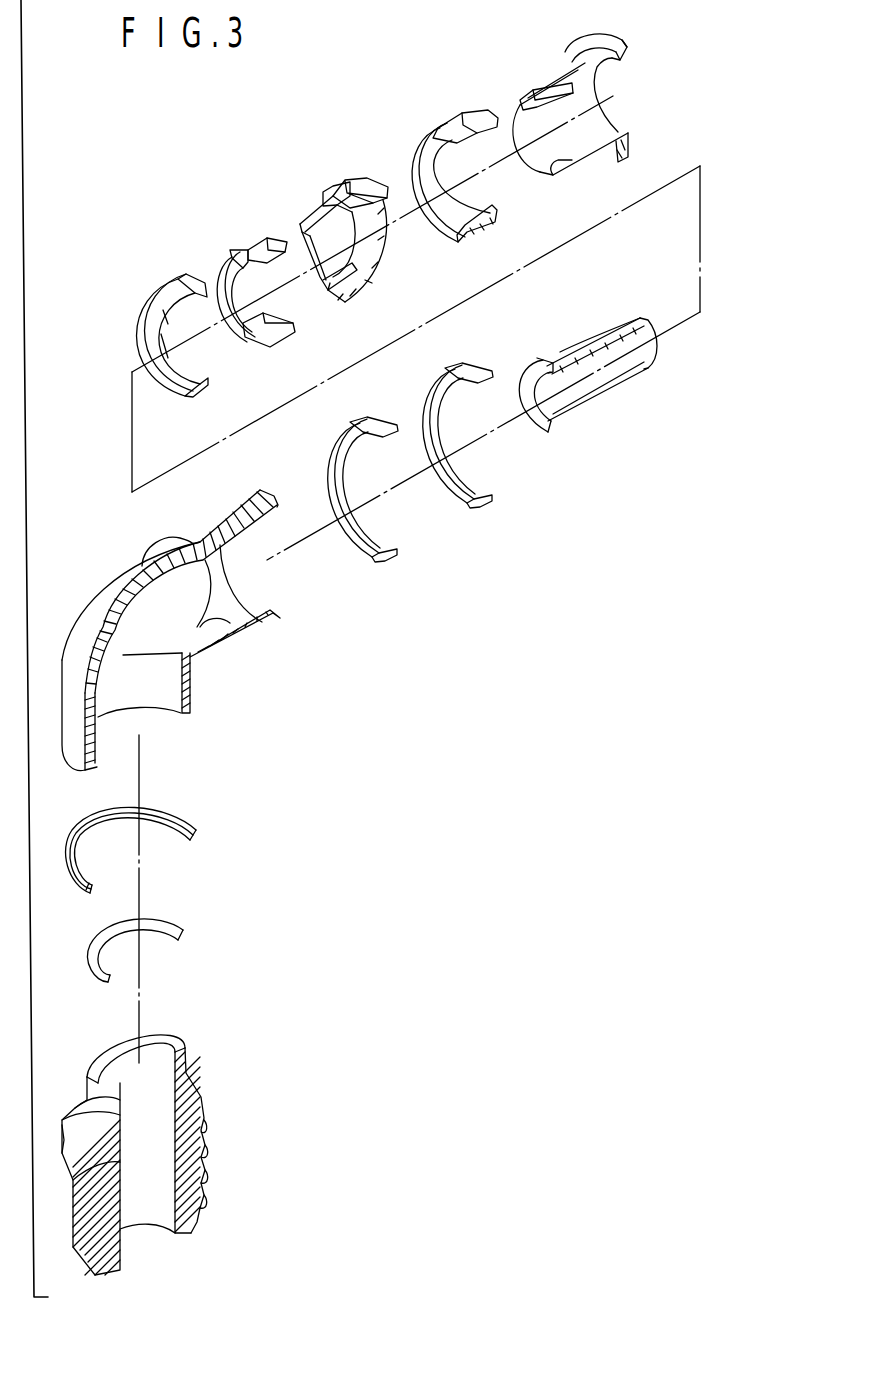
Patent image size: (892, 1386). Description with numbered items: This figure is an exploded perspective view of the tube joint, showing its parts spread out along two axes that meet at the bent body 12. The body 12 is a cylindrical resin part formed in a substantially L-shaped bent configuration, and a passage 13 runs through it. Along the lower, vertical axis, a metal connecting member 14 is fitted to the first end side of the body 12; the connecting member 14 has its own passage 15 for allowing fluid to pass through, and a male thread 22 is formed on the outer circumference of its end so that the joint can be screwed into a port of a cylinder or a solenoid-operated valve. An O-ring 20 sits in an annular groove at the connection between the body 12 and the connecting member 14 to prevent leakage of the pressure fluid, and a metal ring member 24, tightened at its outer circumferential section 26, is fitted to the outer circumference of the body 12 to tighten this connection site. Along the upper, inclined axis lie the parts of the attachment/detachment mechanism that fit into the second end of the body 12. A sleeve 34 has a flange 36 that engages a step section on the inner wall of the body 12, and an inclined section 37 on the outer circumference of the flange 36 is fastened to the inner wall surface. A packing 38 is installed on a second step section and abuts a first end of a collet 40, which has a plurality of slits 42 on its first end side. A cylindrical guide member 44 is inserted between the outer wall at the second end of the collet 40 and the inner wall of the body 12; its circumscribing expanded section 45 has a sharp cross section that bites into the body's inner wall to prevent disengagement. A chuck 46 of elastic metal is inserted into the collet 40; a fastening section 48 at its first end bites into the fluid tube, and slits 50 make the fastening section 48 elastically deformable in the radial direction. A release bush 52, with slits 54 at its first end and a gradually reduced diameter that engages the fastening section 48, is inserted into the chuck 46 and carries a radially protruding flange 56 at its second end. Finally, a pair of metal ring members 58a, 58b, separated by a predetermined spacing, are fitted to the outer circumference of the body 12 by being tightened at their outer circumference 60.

The body 12 is at (112, 578).
The passage 13 is at (190, 634).
The connecting member 14 is at (230, 1105).
The passage 15 is at (166, 1192).
The O-ring 20 is at (176, 925).
The male thread 22 is at (205, 1162).
The ring member 24 is at (108, 812).
The outer circumferential section 26 is at (75, 886).
The sleeve 34 is at (607, 370).
The flange 36 is at (543, 430).
The inclined section 37 is at (548, 362).
The packing 38 is at (180, 283).
The collet 40 is at (380, 182).
The slits 42 is at (298, 236).
The guide member 44 is at (455, 120).
The expanded section 45 is at (480, 237).
The chuck 46 is at (272, 240).
The fastening section 48 is at (225, 283).
The slits 50 is at (232, 262).
The release bush 52 is at (568, 72).
The slits 54 is at (528, 97).
The flange 56 is at (598, 35).
The ring member 58a is at (380, 562).
The ring member 58b is at (467, 500).
The outer circumference 60 is at (478, 368).